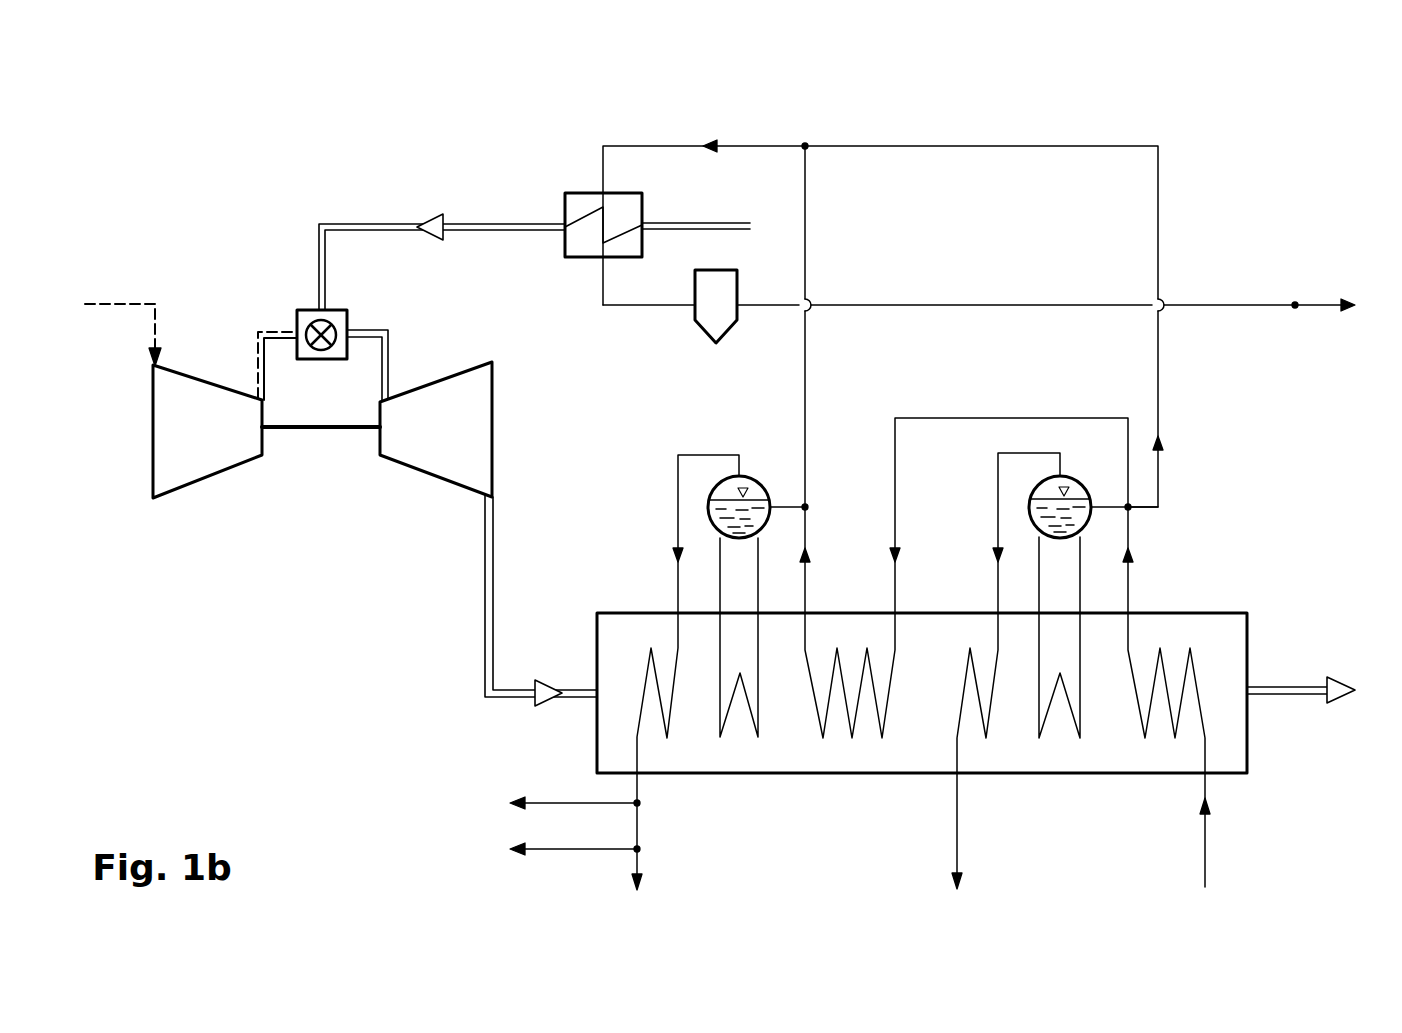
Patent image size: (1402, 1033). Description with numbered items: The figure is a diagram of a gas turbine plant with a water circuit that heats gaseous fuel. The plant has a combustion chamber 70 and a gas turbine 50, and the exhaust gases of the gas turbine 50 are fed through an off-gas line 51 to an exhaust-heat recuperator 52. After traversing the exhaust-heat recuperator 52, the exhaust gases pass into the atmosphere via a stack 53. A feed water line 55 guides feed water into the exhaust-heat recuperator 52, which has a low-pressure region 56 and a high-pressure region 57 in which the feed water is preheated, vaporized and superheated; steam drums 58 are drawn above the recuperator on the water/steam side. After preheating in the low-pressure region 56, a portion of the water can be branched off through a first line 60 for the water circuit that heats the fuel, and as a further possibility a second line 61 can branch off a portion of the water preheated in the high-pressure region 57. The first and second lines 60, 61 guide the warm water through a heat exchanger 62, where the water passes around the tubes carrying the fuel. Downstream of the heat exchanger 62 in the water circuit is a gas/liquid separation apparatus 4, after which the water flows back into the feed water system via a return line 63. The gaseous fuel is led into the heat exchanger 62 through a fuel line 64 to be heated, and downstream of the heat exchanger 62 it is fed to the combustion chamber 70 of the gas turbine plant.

The gas/liquid separation apparatus 4 is at (713, 318).
The gas turbine 50 is at (430, 447).
The off-gas line 51 is at (485, 633).
The exhaust-heat recuperator 52 is at (1217, 647).
The stack 53 is at (1321, 690).
The feed water line 55 is at (1205, 840).
The low-pressure region 56 is at (1085, 808).
The high-pressure region 57 is at (840, 810).
The steam drum 58 is at (755, 493).
The first line 60 is at (1066, 146).
The second line 61 is at (807, 223).
The heat exchanger 62 is at (585, 207).
The return line 63 is at (1295, 305).
The fuel line 64 is at (722, 225).
The combustion chamber 70 is at (307, 317).